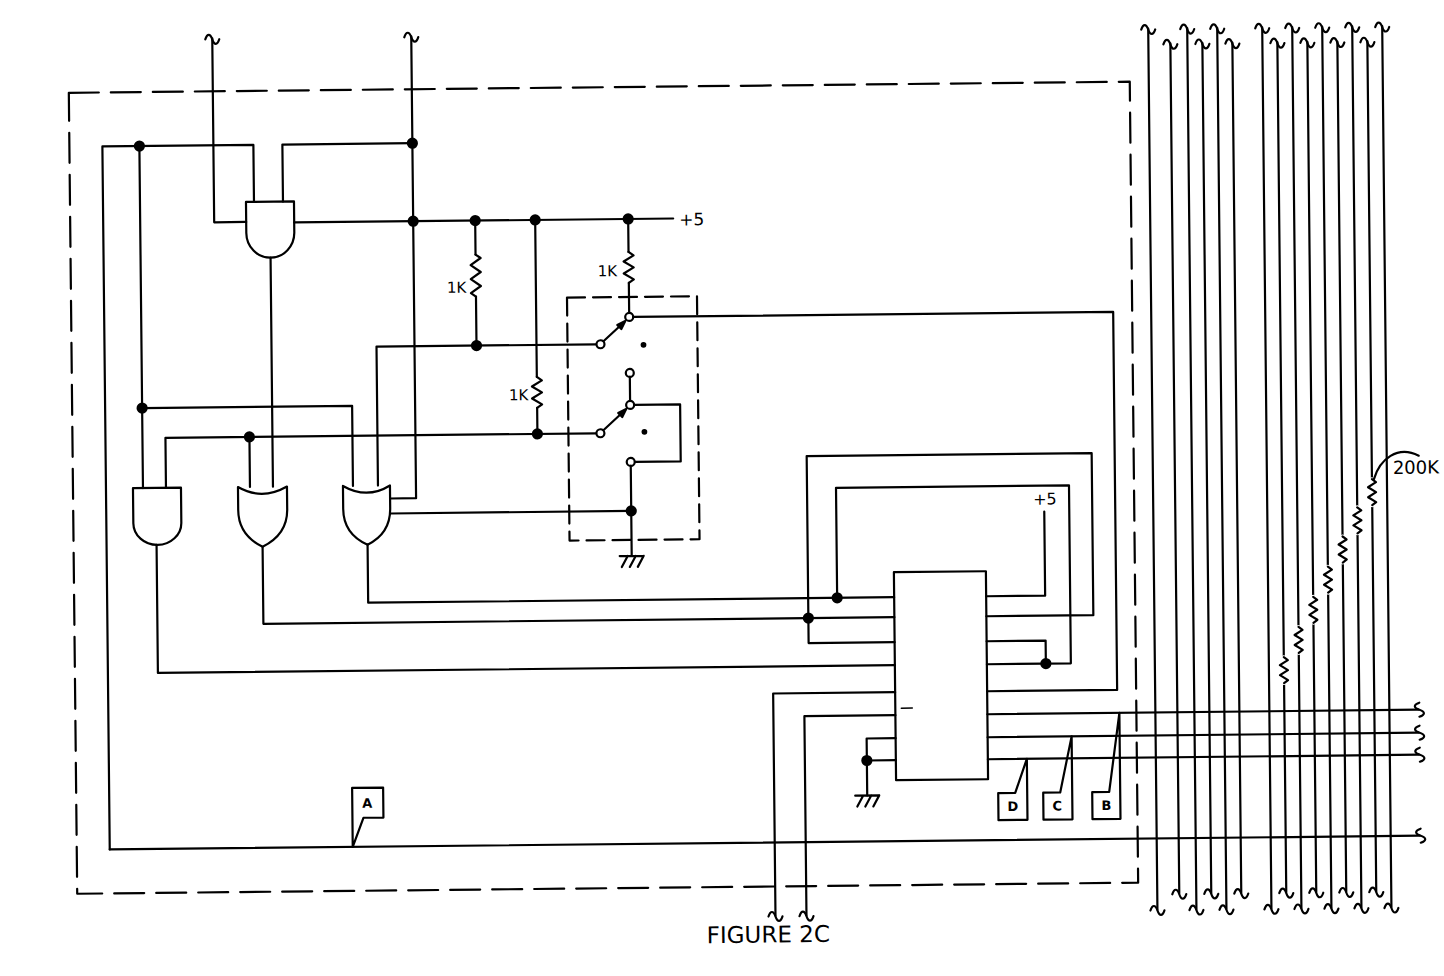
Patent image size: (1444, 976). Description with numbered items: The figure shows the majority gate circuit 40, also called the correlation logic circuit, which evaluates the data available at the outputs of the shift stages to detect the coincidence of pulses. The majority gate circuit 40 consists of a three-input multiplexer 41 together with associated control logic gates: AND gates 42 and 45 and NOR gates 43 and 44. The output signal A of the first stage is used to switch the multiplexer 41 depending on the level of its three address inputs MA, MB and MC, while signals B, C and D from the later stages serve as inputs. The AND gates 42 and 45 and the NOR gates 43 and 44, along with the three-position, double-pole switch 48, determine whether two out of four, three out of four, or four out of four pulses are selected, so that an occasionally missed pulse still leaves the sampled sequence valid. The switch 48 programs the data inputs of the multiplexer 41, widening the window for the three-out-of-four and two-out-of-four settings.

The majority gate circuit 40 is at (1114, 86).
The multiplexer 41 is at (941, 574).
The AND gate 42 is at (166, 539).
The NOR gate 43 is at (277, 532).
The NOR gate 44 is at (383, 526).
The AND gate 45 is at (257, 251).
The switch 48 is at (699, 370).